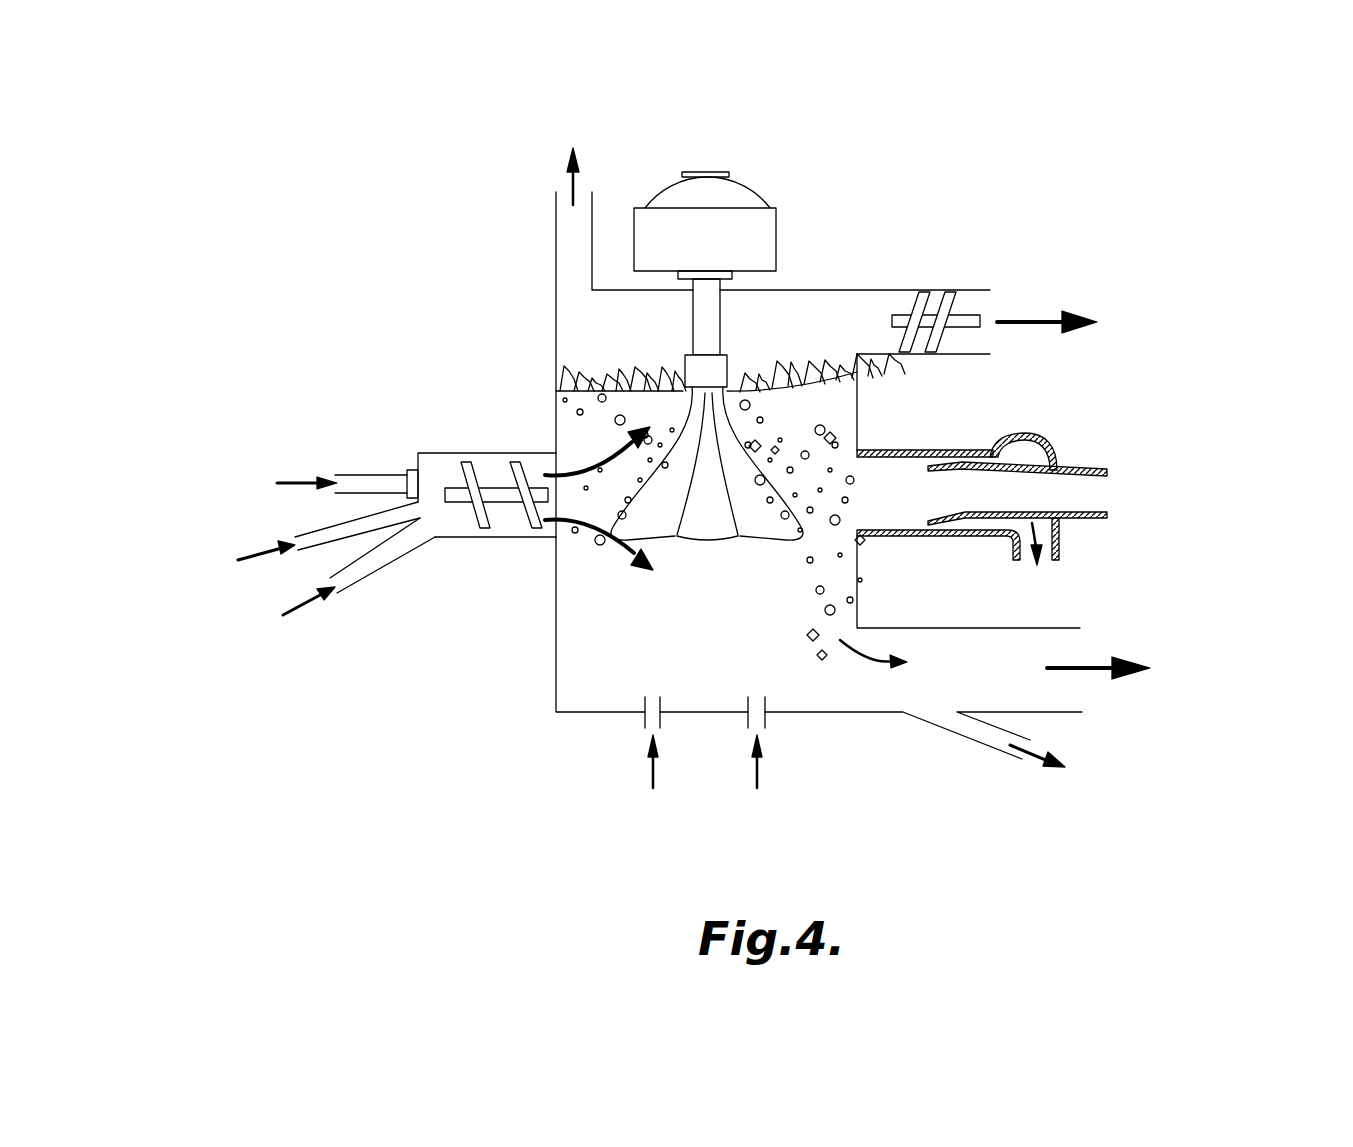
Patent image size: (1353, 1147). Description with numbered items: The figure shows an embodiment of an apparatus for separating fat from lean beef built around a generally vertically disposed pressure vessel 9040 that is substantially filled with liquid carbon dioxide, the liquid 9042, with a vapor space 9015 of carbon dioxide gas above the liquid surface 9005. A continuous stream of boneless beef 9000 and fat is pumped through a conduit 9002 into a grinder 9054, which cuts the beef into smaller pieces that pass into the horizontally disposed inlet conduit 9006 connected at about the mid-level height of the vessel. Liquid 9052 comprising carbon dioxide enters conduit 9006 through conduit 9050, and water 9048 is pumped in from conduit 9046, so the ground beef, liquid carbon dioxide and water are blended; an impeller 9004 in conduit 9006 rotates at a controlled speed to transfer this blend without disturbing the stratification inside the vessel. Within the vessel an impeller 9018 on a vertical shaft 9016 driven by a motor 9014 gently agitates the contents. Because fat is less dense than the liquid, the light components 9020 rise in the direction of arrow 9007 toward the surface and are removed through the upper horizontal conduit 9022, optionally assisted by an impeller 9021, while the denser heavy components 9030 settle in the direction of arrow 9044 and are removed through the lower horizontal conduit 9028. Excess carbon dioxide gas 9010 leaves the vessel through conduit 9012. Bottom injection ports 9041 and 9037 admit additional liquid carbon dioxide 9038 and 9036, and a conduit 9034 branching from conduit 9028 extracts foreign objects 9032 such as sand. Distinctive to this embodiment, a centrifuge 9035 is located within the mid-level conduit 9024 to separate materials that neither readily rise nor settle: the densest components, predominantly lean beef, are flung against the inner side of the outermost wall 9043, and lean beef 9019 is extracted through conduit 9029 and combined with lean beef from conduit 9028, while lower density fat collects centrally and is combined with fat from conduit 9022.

The boneless beef 9000 is at (303, 483).
The conduit 9002 is at (362, 473).
The impeller 9004 is at (460, 480).
The surface of the liquid 9005 is at (680, 393).
The inlet conduit 9006 is at (493, 453).
The arrow 9007 is at (593, 462).
The excess carbon dioxide gas 9010 is at (568, 180).
The conduit 9012 is at (592, 235).
The drive motor 9014 is at (730, 233).
The vapor space 9015 is at (785, 315).
The shaft 9016 is at (708, 310).
The impeller 9018 is at (730, 455).
The lean beef 9019 is at (1063, 532).
The light components 9020 is at (1032, 318).
The impeller 9021 is at (977, 290).
The conduit 9022 is at (945, 357).
The conduit 9024 is at (983, 448).
The conduit 9028 is at (1000, 628).
The conduit 9029 is at (1062, 548).
The heavy components 9030 is at (1070, 668).
The foreign objects 9032 is at (1032, 758).
The conduit 9034 is at (962, 740).
The centrifuge 9035 is at (940, 535).
The carbon dioxide liquid 9036 is at (753, 767).
The bottom injection port 9037 is at (745, 718).
The carbon dioxide liquid 9038 is at (650, 770).
The separation vessel 9040 is at (558, 668).
The bottom injection port 9041 is at (643, 718).
The liquid 9042 is at (713, 612).
The outermost wall 9043 is at (922, 460).
The arrow 9044 is at (593, 532).
The conduit 9046 is at (370, 577).
The water 9048 is at (302, 607).
The conduit 9050 is at (315, 548).
The liquid 9052 is at (258, 552).
The grinder 9054 is at (408, 470).